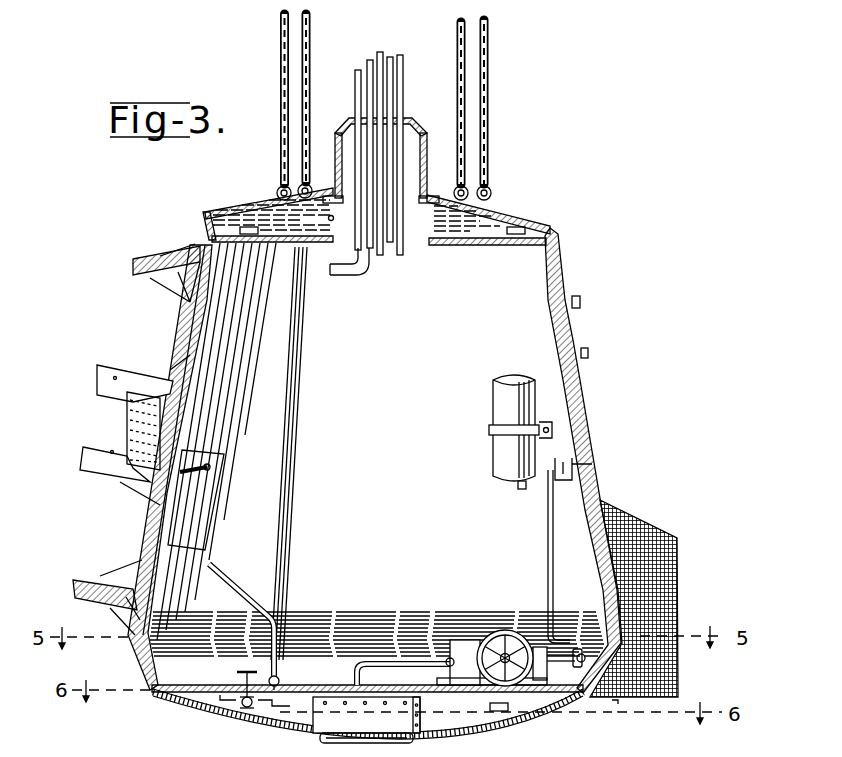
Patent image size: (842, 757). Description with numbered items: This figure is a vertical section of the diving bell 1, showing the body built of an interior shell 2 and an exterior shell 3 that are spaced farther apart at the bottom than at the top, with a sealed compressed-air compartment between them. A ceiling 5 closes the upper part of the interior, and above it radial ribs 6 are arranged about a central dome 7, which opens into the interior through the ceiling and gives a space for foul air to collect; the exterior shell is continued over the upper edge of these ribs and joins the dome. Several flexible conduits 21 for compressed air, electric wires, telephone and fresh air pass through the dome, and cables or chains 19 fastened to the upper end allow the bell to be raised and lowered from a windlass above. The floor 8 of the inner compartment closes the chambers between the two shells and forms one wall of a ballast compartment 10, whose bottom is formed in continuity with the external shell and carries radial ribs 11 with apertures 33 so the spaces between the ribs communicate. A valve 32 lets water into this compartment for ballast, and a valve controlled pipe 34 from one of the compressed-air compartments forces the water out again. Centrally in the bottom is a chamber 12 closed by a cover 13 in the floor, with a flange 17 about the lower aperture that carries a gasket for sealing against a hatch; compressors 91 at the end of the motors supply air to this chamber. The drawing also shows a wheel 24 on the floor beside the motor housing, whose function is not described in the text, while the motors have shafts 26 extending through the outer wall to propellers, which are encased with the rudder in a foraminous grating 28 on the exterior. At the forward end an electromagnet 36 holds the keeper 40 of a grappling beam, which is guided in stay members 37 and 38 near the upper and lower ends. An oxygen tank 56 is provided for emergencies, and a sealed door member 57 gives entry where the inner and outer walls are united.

The bell 1 is at (592, 412).
The interior shell 2 is at (200, 337).
The exterior shell 3 is at (182, 328).
The ceiling 5 is at (478, 247).
The radial ribs 6 is at (500, 228).
The central dome 7 is at (413, 128).
The floor 8 is at (176, 700).
The ballast compartment 10 is at (300, 722).
The radial ribs 11 is at (468, 718).
The chamber 12 is at (368, 738).
The cover 13 is at (386, 686).
The flange 17 is at (438, 726).
The cables or chains 19 is at (490, 137).
The flexible conduits 21 is at (352, 72).
The hand wheel 24 is at (499, 630).
The shafts 26 is at (560, 654).
The foraminous grating 28 is at (646, 525).
The valve 32 is at (233, 716).
The apertures 33 is at (508, 712).
The valve controlled pipe 34 is at (239, 582).
The electromagnet 36 is at (84, 456).
The stay member 37 is at (148, 258).
The stay member 38 is at (70, 583).
The keeper 40 is at (350, 665).
The oxygen tank 56 is at (511, 371).
The door member 57 is at (578, 290).
The compressors 91 is at (462, 640).